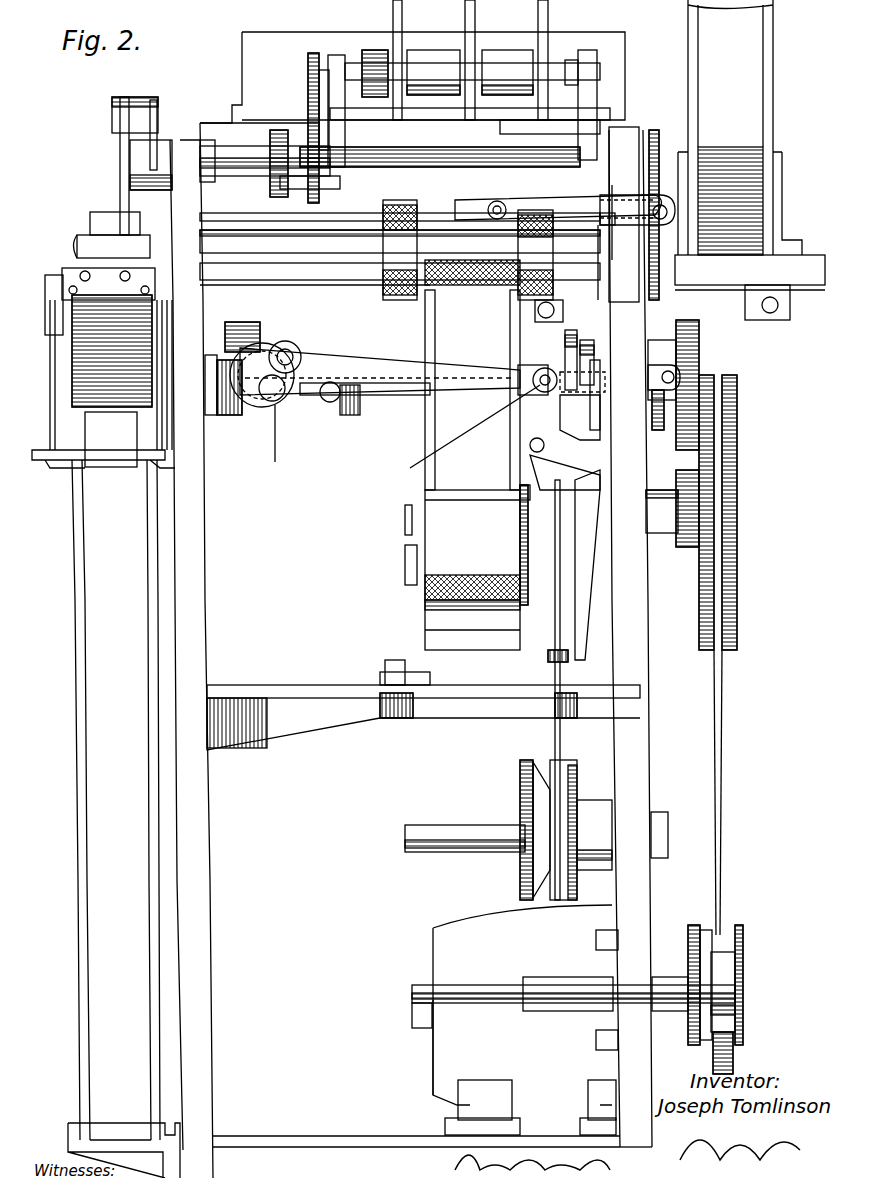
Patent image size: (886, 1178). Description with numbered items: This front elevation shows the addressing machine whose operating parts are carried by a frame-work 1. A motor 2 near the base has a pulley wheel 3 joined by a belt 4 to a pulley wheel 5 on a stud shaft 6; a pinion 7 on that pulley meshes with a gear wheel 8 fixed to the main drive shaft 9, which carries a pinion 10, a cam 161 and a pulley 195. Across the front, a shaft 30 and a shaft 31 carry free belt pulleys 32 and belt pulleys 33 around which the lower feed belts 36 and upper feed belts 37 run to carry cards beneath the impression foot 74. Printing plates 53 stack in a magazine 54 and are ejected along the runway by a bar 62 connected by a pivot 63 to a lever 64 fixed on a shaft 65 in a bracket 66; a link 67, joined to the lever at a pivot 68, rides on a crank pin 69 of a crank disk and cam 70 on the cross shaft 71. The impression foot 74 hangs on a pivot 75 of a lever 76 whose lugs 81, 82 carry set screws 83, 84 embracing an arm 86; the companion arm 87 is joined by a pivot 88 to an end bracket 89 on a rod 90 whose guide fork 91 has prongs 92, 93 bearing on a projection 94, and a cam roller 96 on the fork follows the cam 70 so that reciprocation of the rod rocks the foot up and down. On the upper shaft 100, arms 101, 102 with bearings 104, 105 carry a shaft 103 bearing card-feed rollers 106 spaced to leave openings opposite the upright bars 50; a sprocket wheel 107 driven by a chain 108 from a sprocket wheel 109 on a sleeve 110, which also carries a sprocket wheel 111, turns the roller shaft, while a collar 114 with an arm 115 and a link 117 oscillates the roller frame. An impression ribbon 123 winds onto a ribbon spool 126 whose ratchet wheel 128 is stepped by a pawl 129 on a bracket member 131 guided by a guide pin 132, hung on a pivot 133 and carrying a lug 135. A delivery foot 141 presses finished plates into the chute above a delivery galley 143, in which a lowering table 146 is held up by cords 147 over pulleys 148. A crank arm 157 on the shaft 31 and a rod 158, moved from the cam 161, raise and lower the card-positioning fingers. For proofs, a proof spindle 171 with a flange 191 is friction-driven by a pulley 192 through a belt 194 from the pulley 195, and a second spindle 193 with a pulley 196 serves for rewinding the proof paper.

The frame-work 1 is at (648, 624).
The motor 2 is at (445, 940).
The pulley wheel 3 is at (738, 1035).
The belt 4 is at (725, 870).
The pulley wheel 5 is at (738, 558).
The stud shaft 6 is at (652, 530).
The pinion 7 is at (690, 505).
The gear wheel 8 is at (682, 345).
The main drive shaft 9 is at (410, 395).
The pinion 10 is at (36, 280).
The shaft 30 is at (255, 280).
The shaft 31 is at (296, 295).
The belt pulleys 32 is at (472, 294).
The belt pulleys 33 is at (385, 262).
The lower feed belts 36 is at (520, 320).
The upper feed belts 37 is at (570, 295).
The upright bars 50 is at (393, 10).
The printing plates 53 is at (744, 210).
The magazine 54 is at (774, 172).
The bar 62 is at (748, 315).
The pivot 63 is at (530, 382).
The lever 64 is at (560, 410).
The shaft 65 is at (530, 462).
The bracket 66 is at (583, 500).
The link 67 is at (392, 362).
The pivot 68 is at (458, 433).
The crank pin 69 is at (280, 358).
The crank disk and cam 70 is at (262, 390).
The cross shaft 71 is at (268, 392).
The impression foot 74 is at (450, 225).
The pivot 75 is at (480, 207).
The lever 76 is at (525, 200).
The lug 81 is at (615, 195).
The lug 82 is at (630, 198).
The set screw 83 is at (612, 160).
The set screw 84 is at (606, 228).
The arm 86 is at (645, 130).
The arm 87 is at (690, 355).
The pivot 88 is at (690, 372).
The end bracket 89 is at (652, 410).
The rod 90 is at (598, 365).
The guide fork 91 is at (300, 345).
The prong 92 is at (230, 355).
The prong 93 is at (235, 420).
The projection 94 is at (273, 444).
The cam roller 96 is at (338, 415).
The shaft 100 is at (250, 165).
The arm 101 is at (349, 107).
The arm 102 is at (550, 126).
The shaft 103 is at (575, 50).
The bearing 104 is at (338, 66).
The bearing 105 is at (598, 50).
The rollers 106 is at (490, 55).
The sprocket wheel 107 is at (308, 62).
The chain 108 is at (318, 95).
The sprocket wheel 109 is at (305, 192).
The sleeve 110 is at (295, 150).
The sprocket wheel 111 is at (260, 138).
The collar 114 is at (160, 150).
The arm 115 is at (155, 125).
The link 117 is at (122, 162).
The impression ribbon 123 is at (435, 425).
The ribbon spool 126 is at (462, 570).
The ratchet wheel 128 is at (510, 620).
The pawl 129 is at (528, 515).
The bracket member 131 is at (562, 570).
The guide pin 132 is at (565, 660).
The pivot 133 is at (530, 447).
The lug 135 is at (520, 490).
The delivery foot 141 is at (85, 243).
The delivery galley 143 is at (90, 638).
The lowering table 146 is at (93, 452).
The cords 147 is at (172, 458).
The pulleys 148 is at (50, 300).
The crank arm 157 is at (678, 270).
The rod 158 is at (598, 350).
The cam 161 is at (588, 352).
The proof spindle 171 is at (440, 840).
The flange 191 is at (522, 868).
The pulley 192 is at (575, 740).
The spindle 193 is at (478, 990).
The belt 194 is at (563, 720).
The pulley 195 is at (535, 318).
The pulley 196 is at (715, 940).